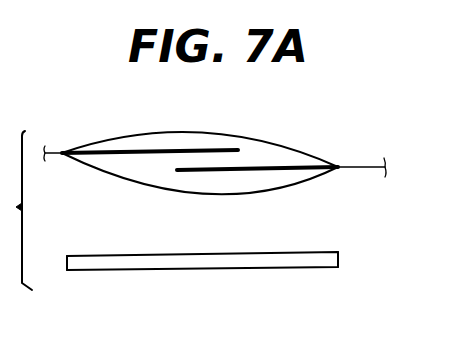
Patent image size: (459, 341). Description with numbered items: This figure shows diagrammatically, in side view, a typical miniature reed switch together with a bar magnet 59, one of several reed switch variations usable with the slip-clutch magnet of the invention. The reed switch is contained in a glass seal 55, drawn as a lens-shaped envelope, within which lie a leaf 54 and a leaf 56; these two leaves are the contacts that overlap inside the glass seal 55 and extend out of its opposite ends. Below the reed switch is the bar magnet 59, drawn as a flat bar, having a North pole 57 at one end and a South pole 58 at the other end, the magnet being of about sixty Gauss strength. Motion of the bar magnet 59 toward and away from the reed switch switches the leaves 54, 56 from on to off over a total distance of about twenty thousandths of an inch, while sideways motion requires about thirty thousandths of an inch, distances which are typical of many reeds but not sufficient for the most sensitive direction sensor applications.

The leaf 54 is at (62, 153).
The glass seal 55 is at (200, 130).
The leaf 56 is at (352, 167).
The North pole 57 is at (67, 270).
The South pole 58 is at (340, 256).
The bar magnet 59 is at (192, 266).